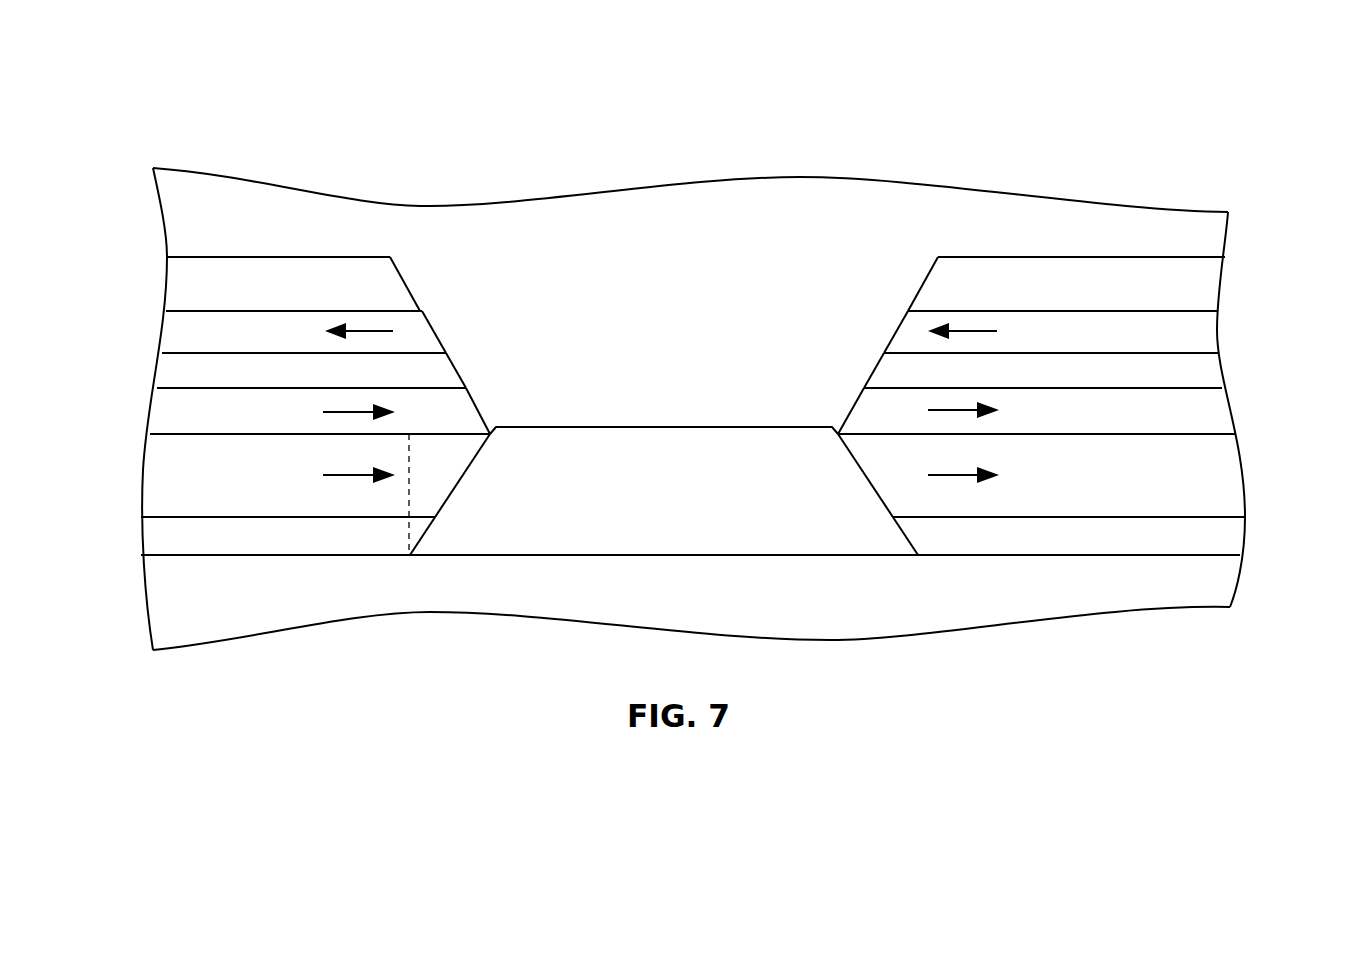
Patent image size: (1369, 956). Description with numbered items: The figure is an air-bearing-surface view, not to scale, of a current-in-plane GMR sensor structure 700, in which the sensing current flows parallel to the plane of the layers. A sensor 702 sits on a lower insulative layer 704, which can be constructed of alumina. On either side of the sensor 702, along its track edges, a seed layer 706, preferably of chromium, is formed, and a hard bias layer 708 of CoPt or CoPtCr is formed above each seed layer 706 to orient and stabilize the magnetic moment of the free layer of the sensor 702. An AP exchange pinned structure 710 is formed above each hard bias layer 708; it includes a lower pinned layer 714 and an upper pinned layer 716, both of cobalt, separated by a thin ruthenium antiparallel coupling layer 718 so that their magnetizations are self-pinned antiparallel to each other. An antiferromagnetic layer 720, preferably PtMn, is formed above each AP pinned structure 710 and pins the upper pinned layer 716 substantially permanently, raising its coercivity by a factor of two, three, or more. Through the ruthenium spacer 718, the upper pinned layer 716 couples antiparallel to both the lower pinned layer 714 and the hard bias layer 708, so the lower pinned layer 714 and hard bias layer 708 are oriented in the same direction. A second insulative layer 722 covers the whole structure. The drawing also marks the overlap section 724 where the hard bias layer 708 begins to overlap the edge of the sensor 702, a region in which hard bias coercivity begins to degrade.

The CIP GMR sensor structure 700 is at (852, 124).
The sensor 702 is at (810, 555).
The lower insulative layer (G1) 704 is at (1240, 580).
The seed layer (SL) 706 is at (1245, 538).
The hard bias layer (HB) 708 is at (1243, 478).
The AP exchange pinned structure 710 is at (67, 434).
The lower pinned layer (AP1) 714 is at (1232, 415).
The upper pinned layer (AP2) 716 is at (1217, 333).
The antiparallel coupling layer (APC) 718 is at (1220, 370).
The antiferromagnetic layer (AFM) 720 is at (1218, 285).
The second insulative layer (G2) 722 is at (1225, 238).
The overlap section 724 is at (440, 480).